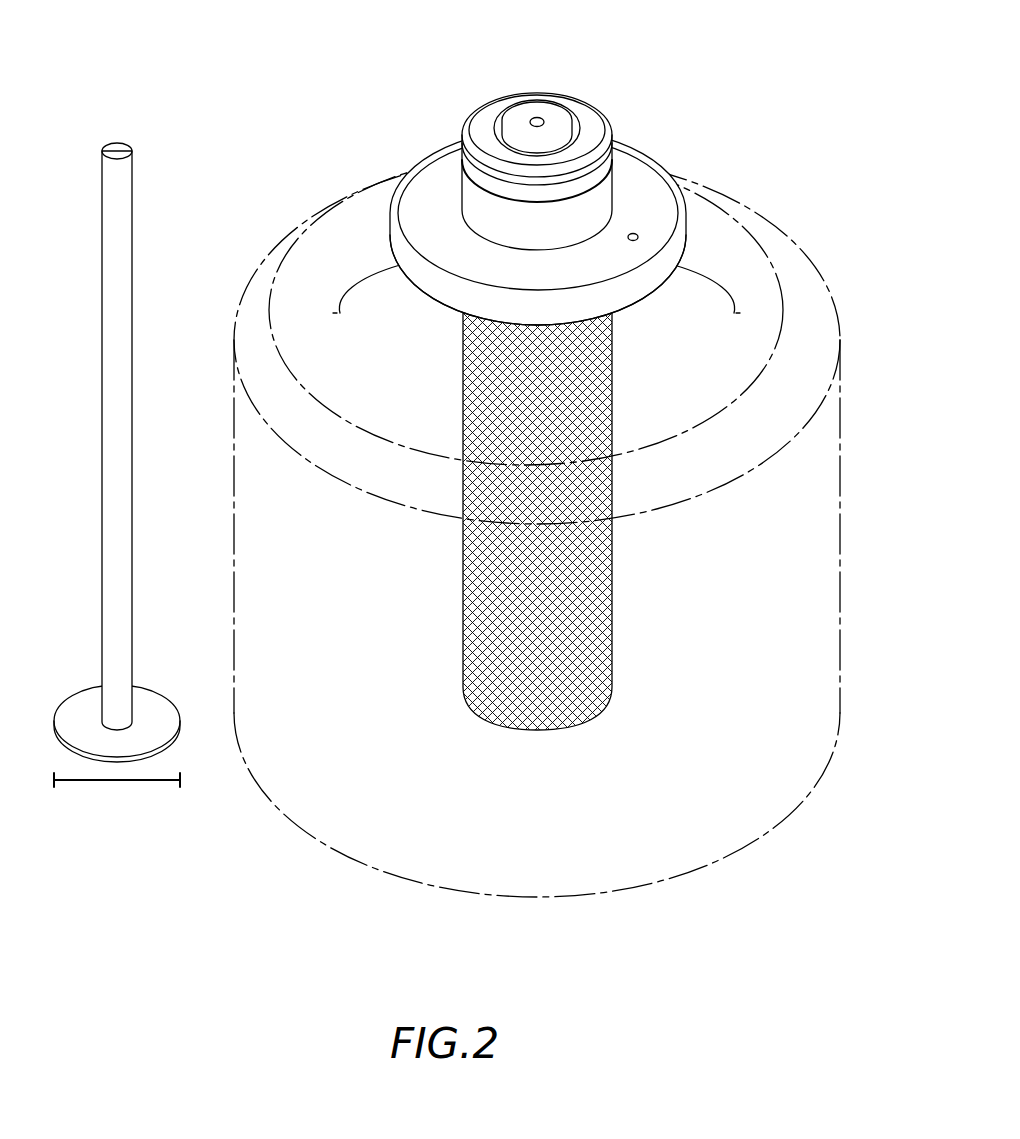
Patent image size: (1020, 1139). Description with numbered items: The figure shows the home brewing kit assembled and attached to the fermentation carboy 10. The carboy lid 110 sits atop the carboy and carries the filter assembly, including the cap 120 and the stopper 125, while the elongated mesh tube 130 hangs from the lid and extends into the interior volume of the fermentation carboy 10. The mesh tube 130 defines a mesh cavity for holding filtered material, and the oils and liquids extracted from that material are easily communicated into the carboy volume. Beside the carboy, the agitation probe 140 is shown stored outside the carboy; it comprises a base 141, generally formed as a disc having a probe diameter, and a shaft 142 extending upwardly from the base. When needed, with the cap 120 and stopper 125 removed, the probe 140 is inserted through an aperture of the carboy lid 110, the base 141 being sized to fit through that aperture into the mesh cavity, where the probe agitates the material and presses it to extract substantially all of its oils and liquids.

The fermentation carboy 10 is at (838, 534).
The carboy lid 110 is at (662, 187).
The cap 120 is at (470, 125).
The stopper 125 is at (547, 110).
The elongated mesh tube 130 is at (563, 728).
The agitation probe 140 is at (143, 479).
The base 141 is at (153, 703).
The shaft 142 is at (123, 420).